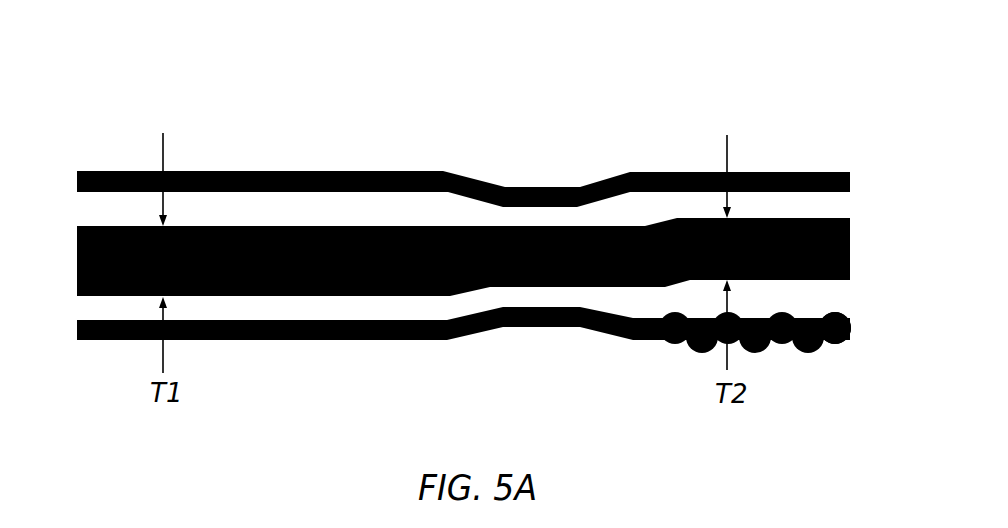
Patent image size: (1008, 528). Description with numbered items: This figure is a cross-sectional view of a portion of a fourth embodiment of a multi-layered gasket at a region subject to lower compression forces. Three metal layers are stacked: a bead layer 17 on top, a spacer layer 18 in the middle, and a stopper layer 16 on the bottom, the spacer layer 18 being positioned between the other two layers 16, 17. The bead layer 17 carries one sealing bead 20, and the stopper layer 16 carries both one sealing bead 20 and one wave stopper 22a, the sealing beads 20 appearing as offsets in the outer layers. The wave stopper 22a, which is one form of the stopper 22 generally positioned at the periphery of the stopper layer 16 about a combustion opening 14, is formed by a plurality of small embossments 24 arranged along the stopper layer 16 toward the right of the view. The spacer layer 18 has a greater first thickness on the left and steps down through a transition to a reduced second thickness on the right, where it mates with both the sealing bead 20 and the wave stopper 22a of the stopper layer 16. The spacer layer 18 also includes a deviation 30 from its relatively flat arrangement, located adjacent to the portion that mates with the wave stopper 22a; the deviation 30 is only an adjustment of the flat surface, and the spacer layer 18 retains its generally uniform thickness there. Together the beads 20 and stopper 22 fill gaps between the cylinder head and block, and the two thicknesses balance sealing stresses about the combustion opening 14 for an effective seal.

The combustion opening 14 is at (884, 242).
The stopper layer 16 is at (77, 335).
The bead layer 17 is at (77, 190).
The spacer layer 18 is at (77, 265).
The sealing bead 20 is at (533, 187).
The stopper 22 is at (829, 356).
The wave stopper 22a is at (850, 333).
The small embossments 24 is at (750, 353).
The deviation 30 is at (688, 218).